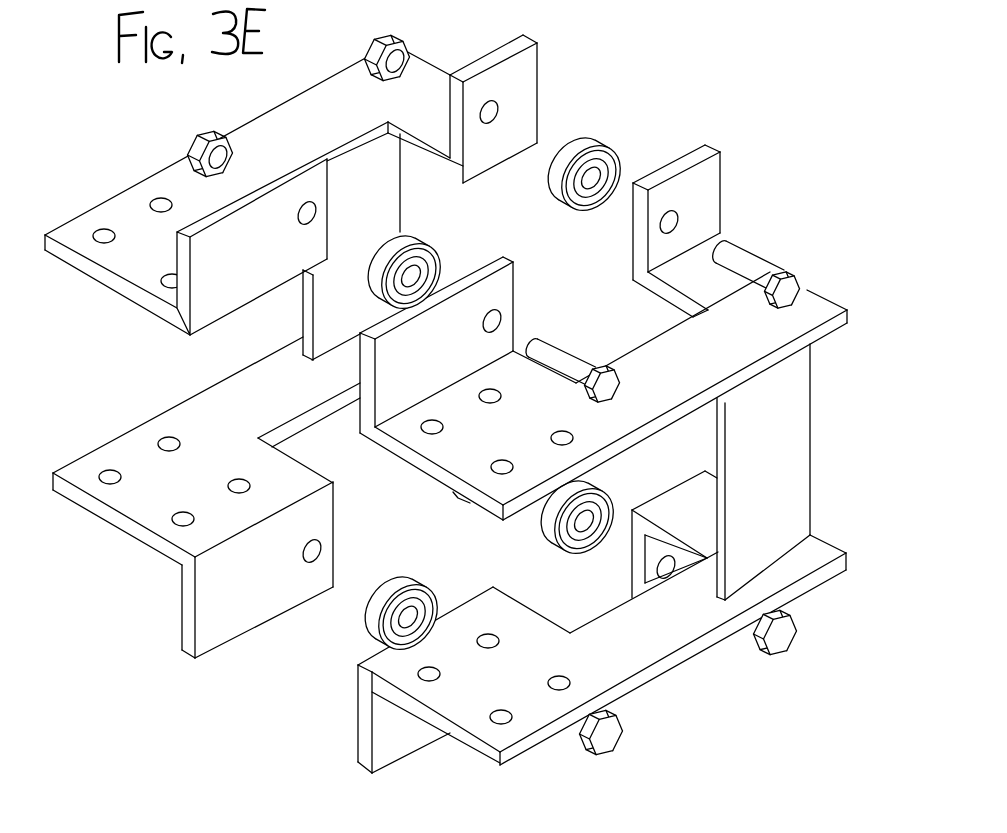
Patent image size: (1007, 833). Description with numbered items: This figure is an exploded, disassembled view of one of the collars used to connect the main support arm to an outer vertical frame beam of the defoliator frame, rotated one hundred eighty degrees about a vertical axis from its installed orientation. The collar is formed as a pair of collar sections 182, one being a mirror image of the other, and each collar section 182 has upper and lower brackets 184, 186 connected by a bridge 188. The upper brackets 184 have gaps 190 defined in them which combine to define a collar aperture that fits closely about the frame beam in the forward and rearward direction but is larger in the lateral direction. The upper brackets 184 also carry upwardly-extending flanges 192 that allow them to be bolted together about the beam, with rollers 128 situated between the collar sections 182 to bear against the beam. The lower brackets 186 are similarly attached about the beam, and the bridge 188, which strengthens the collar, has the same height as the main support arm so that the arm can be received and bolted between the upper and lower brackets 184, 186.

The rollers 128 is at (598, 133).
The collar sections 182 is at (168, 163).
The upper brackets 184 is at (68, 267).
The lower brackets 186 is at (117, 533).
The bridges 188 is at (392, 200).
The gaps 190 is at (418, 173).
The upwardly-extending flanges 192 is at (523, 88).